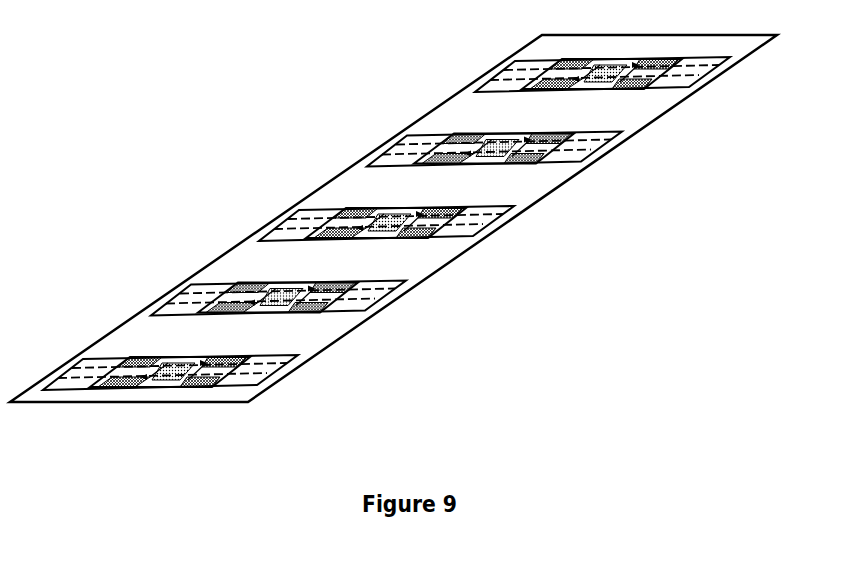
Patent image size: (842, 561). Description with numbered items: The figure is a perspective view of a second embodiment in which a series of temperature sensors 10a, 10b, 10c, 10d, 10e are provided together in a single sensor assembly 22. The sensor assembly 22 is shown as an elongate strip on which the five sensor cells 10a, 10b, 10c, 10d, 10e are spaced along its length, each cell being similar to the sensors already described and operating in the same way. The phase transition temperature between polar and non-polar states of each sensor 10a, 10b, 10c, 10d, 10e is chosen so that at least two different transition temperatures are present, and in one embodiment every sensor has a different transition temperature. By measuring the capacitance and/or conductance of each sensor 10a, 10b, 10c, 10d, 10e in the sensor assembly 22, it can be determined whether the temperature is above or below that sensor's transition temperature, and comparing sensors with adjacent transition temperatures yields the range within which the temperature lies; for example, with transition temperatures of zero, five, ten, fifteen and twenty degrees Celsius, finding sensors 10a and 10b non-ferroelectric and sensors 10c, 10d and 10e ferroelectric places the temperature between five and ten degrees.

The sensor assembly 22 is at (285, 135).
The temperature sensor 10a is at (298, 376).
The temperature sensor 10b is at (408, 297).
The temperature sensor 10c is at (518, 222).
The temperature sensor 10d is at (622, 147).
The temperature sensor 10e is at (732, 74).